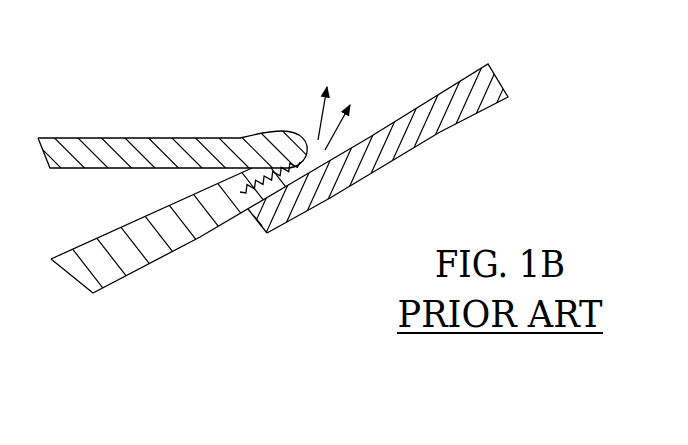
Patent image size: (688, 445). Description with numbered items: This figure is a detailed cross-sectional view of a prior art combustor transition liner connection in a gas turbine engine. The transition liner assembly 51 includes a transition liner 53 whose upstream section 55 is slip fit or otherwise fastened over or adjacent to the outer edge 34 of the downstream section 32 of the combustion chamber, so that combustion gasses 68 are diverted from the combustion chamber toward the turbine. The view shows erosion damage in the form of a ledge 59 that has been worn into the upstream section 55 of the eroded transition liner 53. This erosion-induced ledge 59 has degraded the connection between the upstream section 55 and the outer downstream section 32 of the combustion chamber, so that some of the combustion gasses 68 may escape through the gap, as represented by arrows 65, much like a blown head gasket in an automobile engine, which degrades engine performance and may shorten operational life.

The transition liner assembly 51 is at (213, 110).
The outer edge of the combustion chamber downstream section 34 is at (287, 195).
The arrows representing escaping gasses 65 is at (328, 105).
The downstream section of the combustion chamber 32 is at (410, 135).
The upstream section of the transition liner 55 is at (122, 238).
The transition liner 53 is at (107, 281).
The ledge 59 is at (248, 208).
The combustion gasses 68 is at (252, 230).